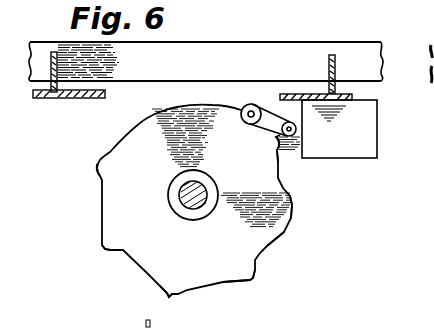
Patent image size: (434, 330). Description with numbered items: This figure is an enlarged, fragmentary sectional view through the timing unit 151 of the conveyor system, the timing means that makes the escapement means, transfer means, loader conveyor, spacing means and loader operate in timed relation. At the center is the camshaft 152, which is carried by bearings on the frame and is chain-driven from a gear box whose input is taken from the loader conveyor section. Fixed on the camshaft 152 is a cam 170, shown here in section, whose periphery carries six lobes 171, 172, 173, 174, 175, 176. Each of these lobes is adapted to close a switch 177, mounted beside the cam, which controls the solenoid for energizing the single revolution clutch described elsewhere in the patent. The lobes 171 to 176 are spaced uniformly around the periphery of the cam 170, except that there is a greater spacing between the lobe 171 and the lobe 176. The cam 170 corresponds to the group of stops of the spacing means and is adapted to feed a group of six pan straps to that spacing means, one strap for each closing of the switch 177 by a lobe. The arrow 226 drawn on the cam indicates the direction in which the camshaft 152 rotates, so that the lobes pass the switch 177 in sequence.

The timing unit 151 is at (127, 286).
The camshaft 152 is at (193, 209).
The cam 170 is at (272, 241).
The lobe 171 is at (281, 150).
The lobe 172 is at (292, 207).
The lobe 173 is at (253, 276).
The lobe 174 is at (169, 296).
The lobe 175 is at (107, 250).
The lobe 176 is at (100, 172).
The switch 177 is at (336, 155).
The arrow 226 is at (142, 185).